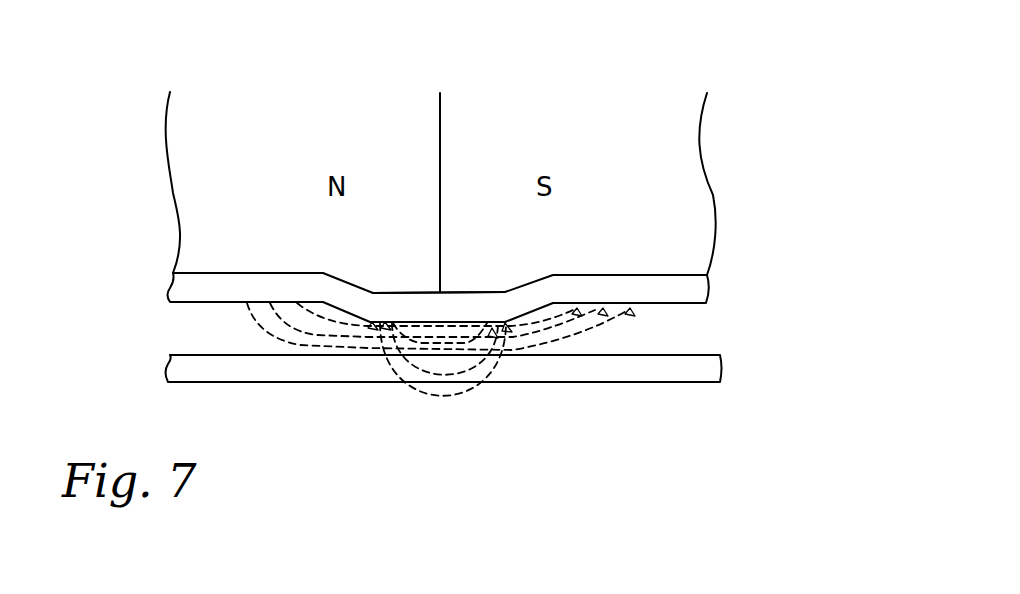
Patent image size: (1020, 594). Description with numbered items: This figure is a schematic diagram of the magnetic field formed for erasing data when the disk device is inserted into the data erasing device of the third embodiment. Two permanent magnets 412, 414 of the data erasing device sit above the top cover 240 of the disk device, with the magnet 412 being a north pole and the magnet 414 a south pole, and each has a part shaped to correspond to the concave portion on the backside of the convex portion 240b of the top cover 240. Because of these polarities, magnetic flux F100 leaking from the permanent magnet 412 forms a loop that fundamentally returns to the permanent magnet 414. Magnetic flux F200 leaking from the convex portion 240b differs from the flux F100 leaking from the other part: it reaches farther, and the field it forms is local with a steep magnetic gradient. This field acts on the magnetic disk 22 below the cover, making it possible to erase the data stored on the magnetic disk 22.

The permanent magnet 412 is at (197, 193).
The permanent magnet 414 is at (683, 195).
The top cover 240 is at (712, 288).
The convex portion 240b is at (410, 305).
The magnetic disk 22 is at (720, 380).
The magnetic flux F100 is at (608, 328).
The magnetic flux F200 is at (463, 391).